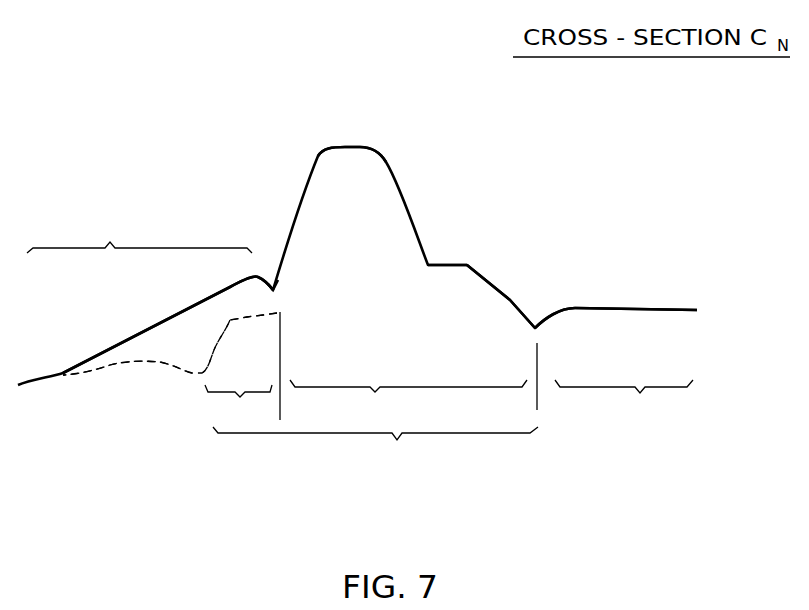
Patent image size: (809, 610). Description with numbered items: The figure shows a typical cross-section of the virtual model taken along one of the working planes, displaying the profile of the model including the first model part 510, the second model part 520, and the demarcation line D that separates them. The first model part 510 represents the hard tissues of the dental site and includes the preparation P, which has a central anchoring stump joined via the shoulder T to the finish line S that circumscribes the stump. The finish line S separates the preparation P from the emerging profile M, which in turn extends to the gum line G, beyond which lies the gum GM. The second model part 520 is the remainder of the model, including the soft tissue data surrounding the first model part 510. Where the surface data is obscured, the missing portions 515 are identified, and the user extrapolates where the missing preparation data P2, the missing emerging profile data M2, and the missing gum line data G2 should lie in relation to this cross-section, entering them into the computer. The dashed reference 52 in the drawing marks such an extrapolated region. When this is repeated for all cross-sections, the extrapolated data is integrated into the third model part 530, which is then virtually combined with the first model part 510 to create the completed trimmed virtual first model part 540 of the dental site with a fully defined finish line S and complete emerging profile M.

The second model part 520 is at (360, 318).
The first model part 510 is at (408, 400).
The third model part 530 is at (238, 404).
The completed trimmed virtual first model part 540 is at (375, 451).
The missing portions 515 is at (197, 325).
The missing emerging profile data M2 is at (213, 345).
The missing gum line data G2 is at (192, 375).
The missing preparation data P2 is at (270, 305).
The dashed reference surface 52 is at (243, 320).
The demarcation line D is at (274, 288).
The preparation P is at (363, 182).
The shoulder T is at (447, 265).
The finish line S is at (467, 265).
The emerging profile M is at (510, 300).
The gum line G is at (537, 323).
The gum GM is at (657, 310).